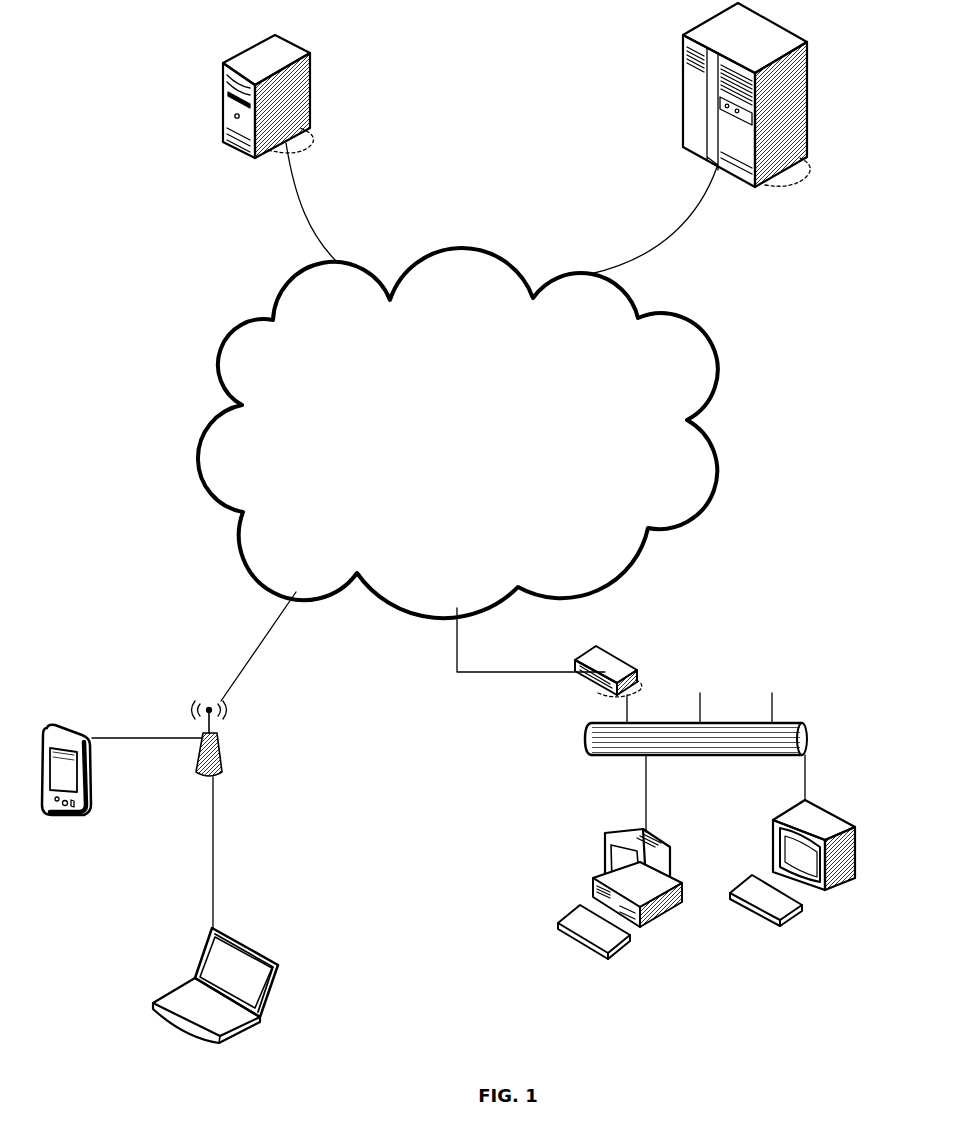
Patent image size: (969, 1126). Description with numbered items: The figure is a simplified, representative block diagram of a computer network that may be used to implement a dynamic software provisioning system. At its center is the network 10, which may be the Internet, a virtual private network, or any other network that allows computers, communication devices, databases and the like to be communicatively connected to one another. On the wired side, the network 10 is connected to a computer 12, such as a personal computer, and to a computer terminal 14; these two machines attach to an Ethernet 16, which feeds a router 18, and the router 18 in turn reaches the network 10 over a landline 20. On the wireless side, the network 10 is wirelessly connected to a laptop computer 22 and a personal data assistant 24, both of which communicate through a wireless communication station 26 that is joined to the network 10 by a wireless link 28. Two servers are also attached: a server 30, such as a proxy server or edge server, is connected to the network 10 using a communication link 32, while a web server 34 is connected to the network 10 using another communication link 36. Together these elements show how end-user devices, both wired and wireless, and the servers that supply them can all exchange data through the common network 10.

The network 10 is at (168, 327).
The computer 12 is at (600, 877).
The computer terminal 14 is at (842, 817).
The Ethernet 16 is at (798, 723).
The router 18 is at (637, 670).
The landline 20 is at (498, 673).
The laptop computer 22 is at (237, 1035).
The personal data assistant 24 is at (70, 728).
The wireless communication station 26 is at (225, 773).
The wireless link 28 is at (250, 660).
The server 30 is at (310, 97).
The communication link 32 is at (318, 238).
The web server 34 is at (768, 182).
The communication link 36 is at (685, 222).